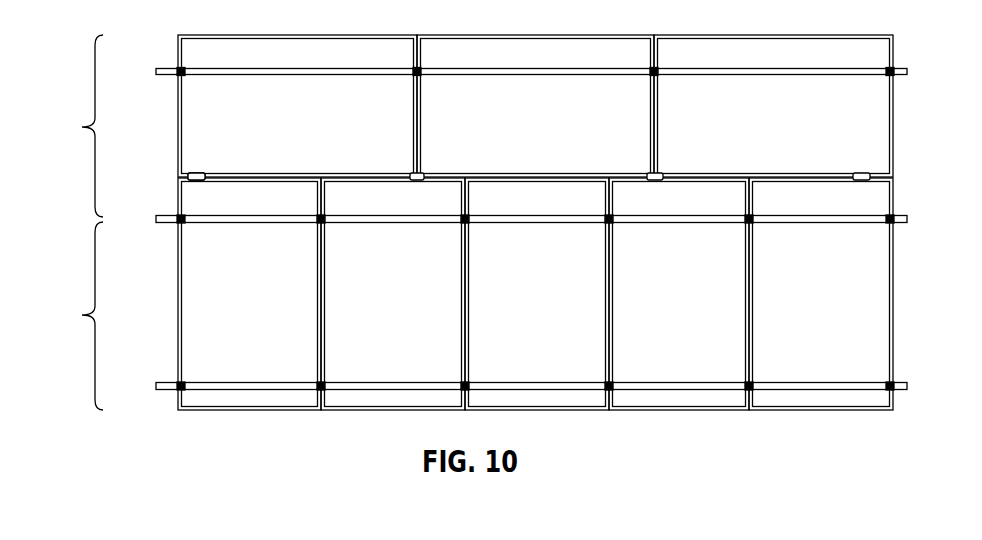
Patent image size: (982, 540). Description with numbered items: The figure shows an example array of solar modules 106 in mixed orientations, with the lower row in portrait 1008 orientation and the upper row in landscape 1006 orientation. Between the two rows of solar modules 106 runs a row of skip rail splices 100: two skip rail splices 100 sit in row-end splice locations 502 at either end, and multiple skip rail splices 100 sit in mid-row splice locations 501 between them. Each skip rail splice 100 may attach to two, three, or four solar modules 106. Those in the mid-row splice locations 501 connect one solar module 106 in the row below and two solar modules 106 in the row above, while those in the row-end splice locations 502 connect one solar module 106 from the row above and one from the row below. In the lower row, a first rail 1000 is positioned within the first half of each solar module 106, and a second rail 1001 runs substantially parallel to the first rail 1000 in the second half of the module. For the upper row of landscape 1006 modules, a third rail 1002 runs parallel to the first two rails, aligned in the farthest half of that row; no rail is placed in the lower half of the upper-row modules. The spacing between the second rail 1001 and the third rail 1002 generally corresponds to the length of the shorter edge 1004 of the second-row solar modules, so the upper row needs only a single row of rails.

The solar module 106 is at (293, 34).
The skip rail splice 100 is at (194, 185).
The mid-row splice location 501 is at (422, 172).
The row-end splice location 502 is at (200, 172).
The first rail 1000 is at (899, 391).
The second rail 1001 is at (899, 225).
The third rail 1002 is at (898, 77).
The shorter edge 1004 is at (171, 130).
The landscape orientation 1006 is at (82, 127).
The portrait orientation 1008 is at (82, 315).